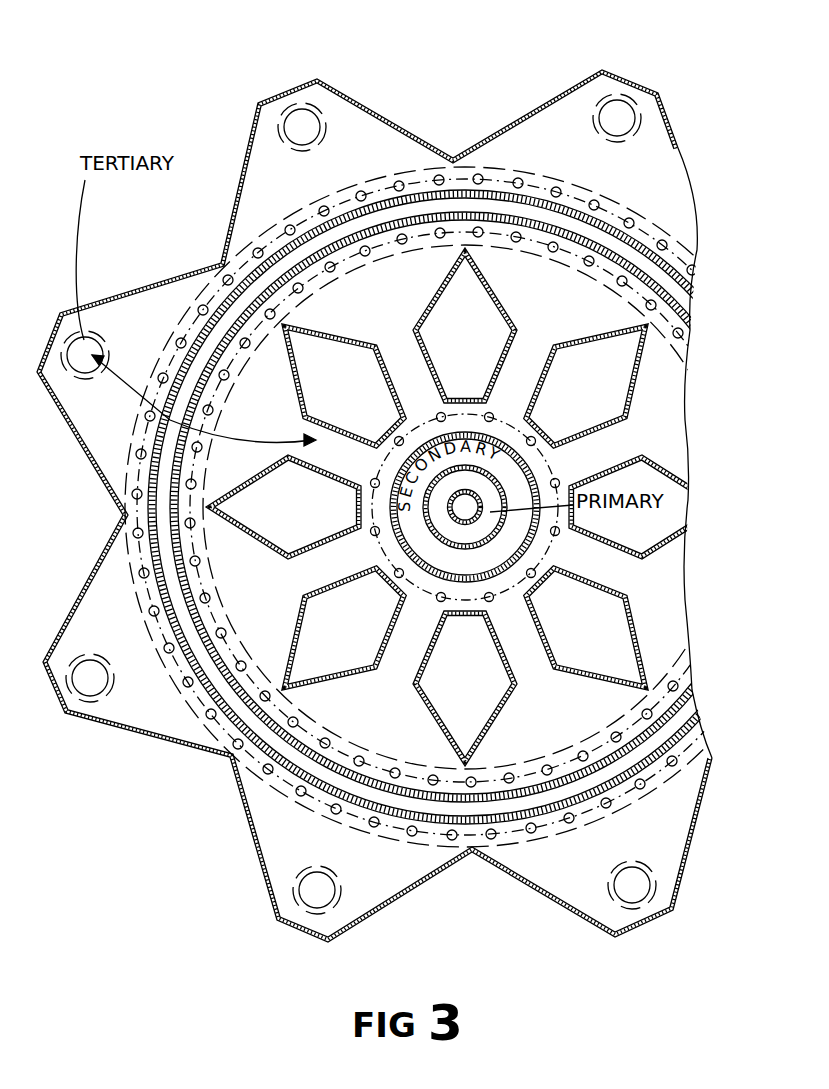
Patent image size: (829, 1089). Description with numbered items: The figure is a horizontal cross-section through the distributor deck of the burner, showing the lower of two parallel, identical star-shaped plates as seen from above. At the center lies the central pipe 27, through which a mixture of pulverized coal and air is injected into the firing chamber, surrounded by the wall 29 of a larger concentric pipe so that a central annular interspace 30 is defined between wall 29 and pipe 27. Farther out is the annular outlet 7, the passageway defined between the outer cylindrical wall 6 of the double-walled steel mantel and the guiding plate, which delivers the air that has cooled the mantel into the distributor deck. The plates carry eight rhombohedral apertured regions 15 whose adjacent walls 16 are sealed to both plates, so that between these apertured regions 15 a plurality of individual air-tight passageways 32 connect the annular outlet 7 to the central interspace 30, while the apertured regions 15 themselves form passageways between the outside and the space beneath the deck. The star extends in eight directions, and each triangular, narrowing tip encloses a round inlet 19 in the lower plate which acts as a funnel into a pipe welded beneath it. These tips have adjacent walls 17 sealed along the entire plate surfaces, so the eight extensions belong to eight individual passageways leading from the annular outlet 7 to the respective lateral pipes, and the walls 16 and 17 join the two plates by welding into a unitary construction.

The outer cylindrical wall 6 is at (458, 218).
The annular outlet 7 is at (160, 455).
The apertured regions 15 is at (342, 353).
The adjacent walls 16 is at (388, 378).
The adjacent walls 17 is at (198, 750).
The inlets 19 is at (318, 112).
The central pipe 27 is at (455, 543).
The wall 29 is at (520, 458).
The interspace 30 is at (593, 635).
The air tight passageways 32 is at (312, 572).